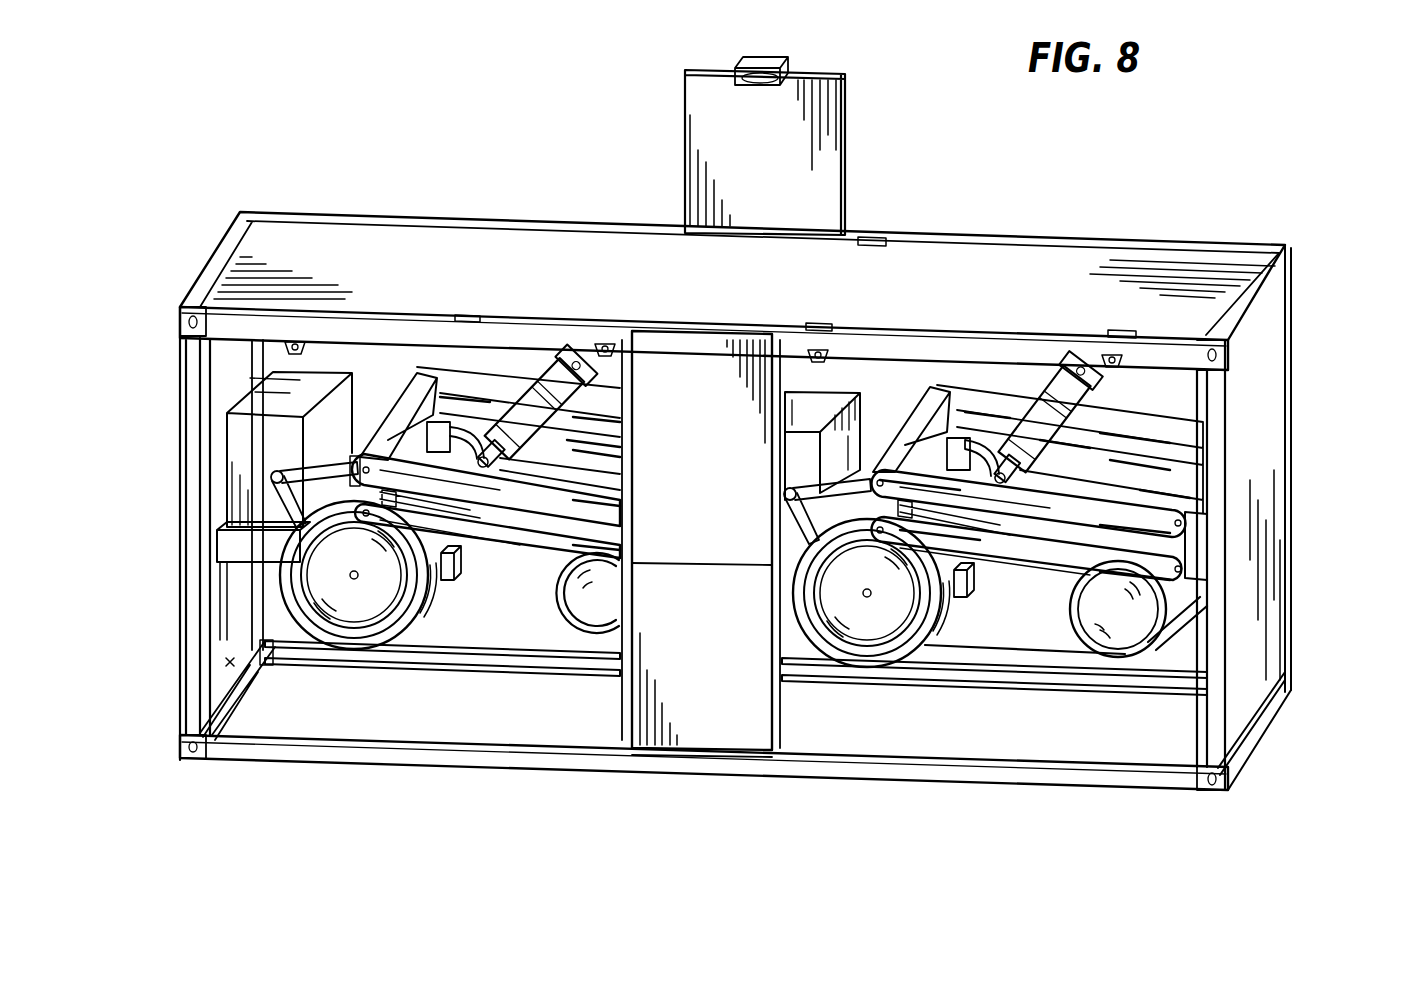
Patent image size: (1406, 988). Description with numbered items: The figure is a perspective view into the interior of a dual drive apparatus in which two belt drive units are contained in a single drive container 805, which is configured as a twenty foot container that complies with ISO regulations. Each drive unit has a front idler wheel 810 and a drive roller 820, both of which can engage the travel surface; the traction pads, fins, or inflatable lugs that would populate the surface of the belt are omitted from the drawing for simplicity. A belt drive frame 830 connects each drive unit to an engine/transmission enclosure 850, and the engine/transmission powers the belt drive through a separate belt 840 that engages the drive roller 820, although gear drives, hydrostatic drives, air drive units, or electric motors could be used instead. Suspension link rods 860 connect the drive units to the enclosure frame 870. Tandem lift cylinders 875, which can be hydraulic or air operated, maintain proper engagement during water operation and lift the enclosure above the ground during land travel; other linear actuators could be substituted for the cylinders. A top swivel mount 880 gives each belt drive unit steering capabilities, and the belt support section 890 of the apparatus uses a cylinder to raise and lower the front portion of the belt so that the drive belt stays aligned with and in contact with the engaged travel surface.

The drive container 805 is at (1289, 250).
The front idler wheel 810 is at (603, 613).
The drive roller 820 is at (350, 607).
The belt drive frame 830 is at (250, 552).
The separate belt 840 is at (275, 505).
The engine/transmission enclosure 850 is at (243, 441).
The suspension link rods 860 is at (470, 522).
The enclosure frame 870 is at (1212, 538).
The tandem lift cylinders 875 is at (527, 400).
The top swivel mount 880 is at (913, 430).
The belt support section 890 is at (453, 585).